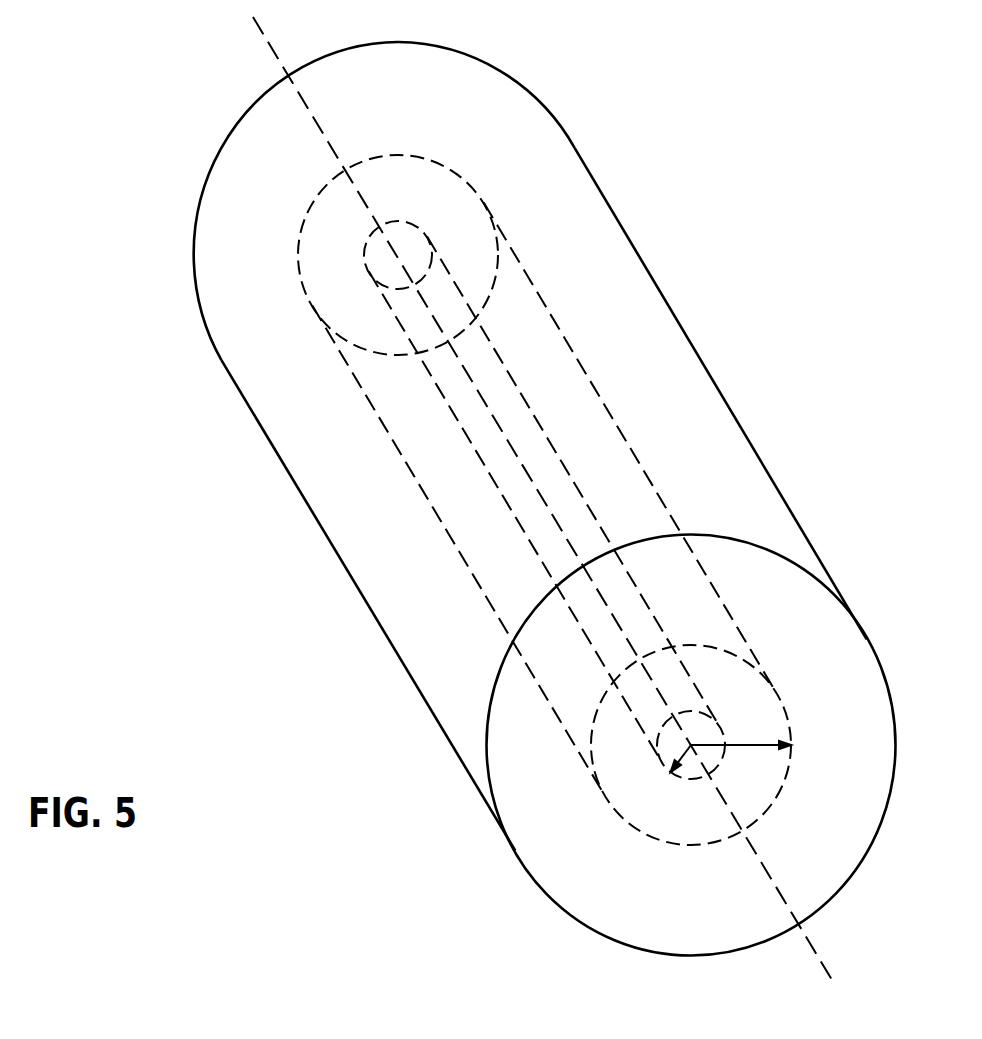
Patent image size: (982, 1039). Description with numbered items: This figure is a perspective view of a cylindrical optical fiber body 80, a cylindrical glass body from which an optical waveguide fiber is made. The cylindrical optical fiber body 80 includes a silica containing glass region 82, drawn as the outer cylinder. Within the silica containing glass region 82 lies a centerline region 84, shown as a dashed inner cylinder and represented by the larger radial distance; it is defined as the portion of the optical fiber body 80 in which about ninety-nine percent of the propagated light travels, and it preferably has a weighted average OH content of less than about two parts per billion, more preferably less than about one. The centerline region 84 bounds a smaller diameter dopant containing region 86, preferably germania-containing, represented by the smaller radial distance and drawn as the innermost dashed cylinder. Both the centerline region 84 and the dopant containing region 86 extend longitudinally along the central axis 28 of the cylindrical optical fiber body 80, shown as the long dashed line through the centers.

The cylindrical optical fiber body 80 is at (535, 515).
The silica containing glass region 82 is at (428, 637).
The centerline region 84 is at (746, 688).
The dopant containing region 86 is at (713, 762).
The central axis 28 is at (818, 957).